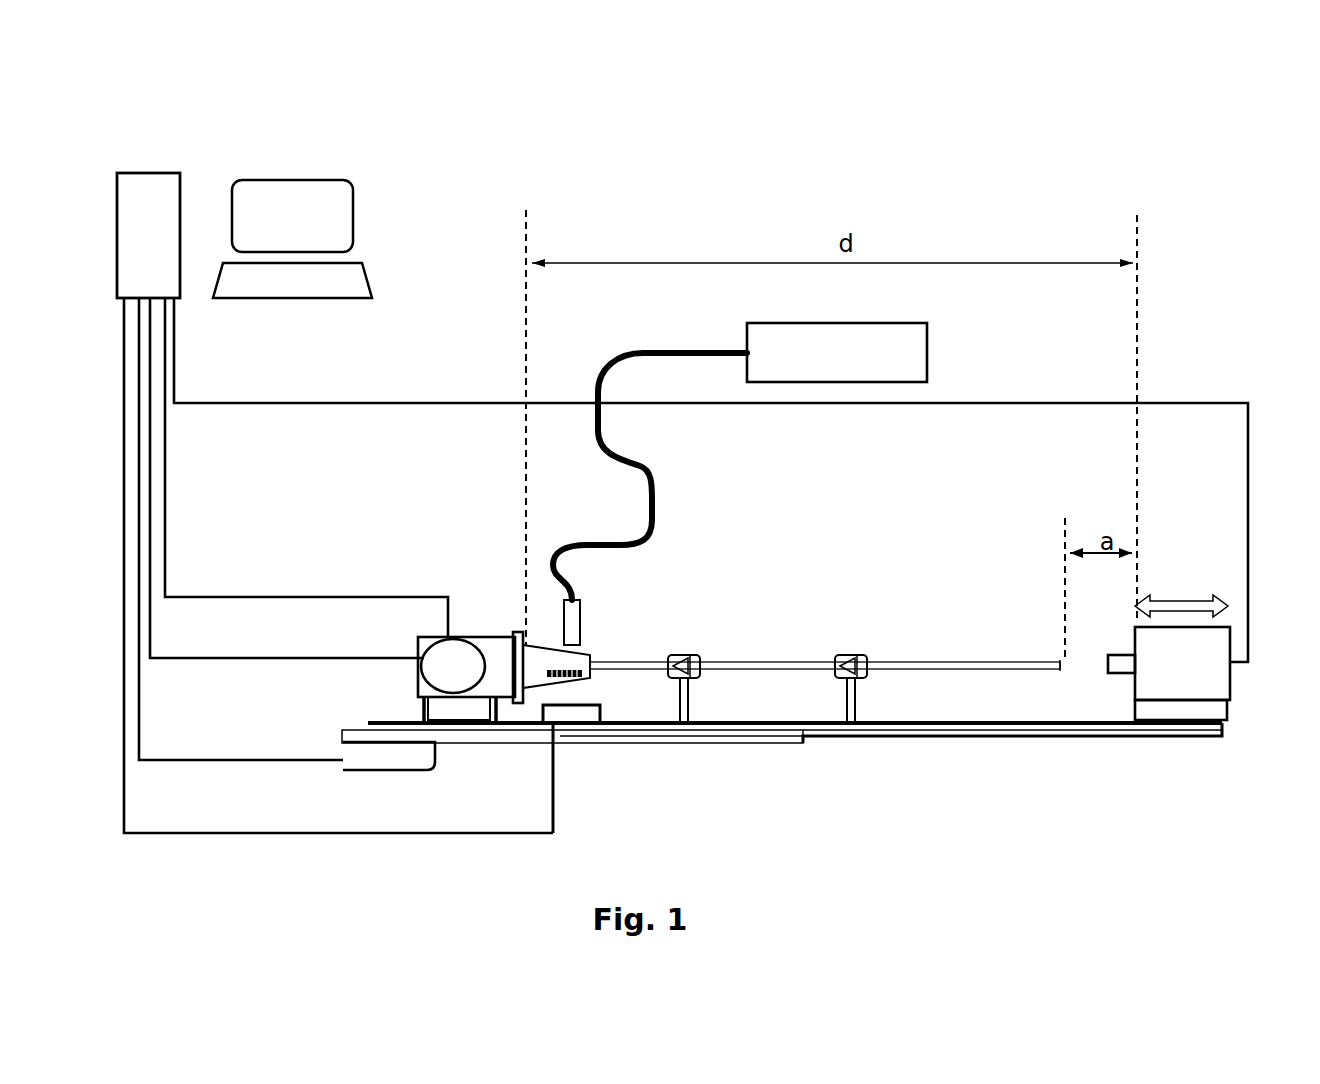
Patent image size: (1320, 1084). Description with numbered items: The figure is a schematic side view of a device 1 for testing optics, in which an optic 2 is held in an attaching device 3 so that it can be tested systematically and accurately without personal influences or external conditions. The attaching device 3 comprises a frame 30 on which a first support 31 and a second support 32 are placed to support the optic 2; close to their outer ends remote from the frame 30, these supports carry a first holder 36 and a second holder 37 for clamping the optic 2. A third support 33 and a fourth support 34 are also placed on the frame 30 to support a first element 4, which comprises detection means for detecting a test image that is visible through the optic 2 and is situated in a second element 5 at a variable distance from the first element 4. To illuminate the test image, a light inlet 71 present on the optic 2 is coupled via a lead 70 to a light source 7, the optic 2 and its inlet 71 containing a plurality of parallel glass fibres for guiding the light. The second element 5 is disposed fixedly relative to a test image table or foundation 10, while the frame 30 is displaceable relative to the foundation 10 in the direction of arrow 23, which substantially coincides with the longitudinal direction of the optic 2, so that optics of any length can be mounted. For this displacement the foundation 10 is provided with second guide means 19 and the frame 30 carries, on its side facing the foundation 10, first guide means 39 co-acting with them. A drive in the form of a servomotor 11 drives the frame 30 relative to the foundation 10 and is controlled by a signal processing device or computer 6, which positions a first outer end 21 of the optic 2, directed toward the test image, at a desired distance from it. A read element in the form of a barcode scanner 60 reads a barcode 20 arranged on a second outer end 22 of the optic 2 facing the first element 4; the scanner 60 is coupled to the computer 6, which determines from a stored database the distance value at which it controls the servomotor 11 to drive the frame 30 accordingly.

The device 1 is at (640, 172).
The optic 2 is at (762, 652).
The attaching device 3 is at (970, 755).
The first element 4 is at (485, 647).
The second element 5 is at (1212, 653).
The signal processing device 6 is at (160, 195).
The light source 7 is at (882, 370).
The foundation 10 is at (1130, 735).
The servomotor 11 is at (348, 767).
The second guide means 19 is at (768, 732).
The barcode 20 is at (568, 672).
The first outer end 21 is at (1052, 653).
The second outer end 22 is at (540, 638).
The arrow 23 is at (1186, 593).
The frame 30 is at (635, 720).
The first support 31 is at (858, 699).
The second support 32 is at (692, 699).
The third support 33 is at (492, 712).
The fourth support 34 is at (413, 707).
The first holder 36 is at (855, 652).
The second holder 37 is at (695, 652).
The first guide means 39 is at (707, 733).
The barcode scanner 60 is at (580, 713).
The lead 70 is at (660, 473).
The light inlet 71 is at (585, 615).